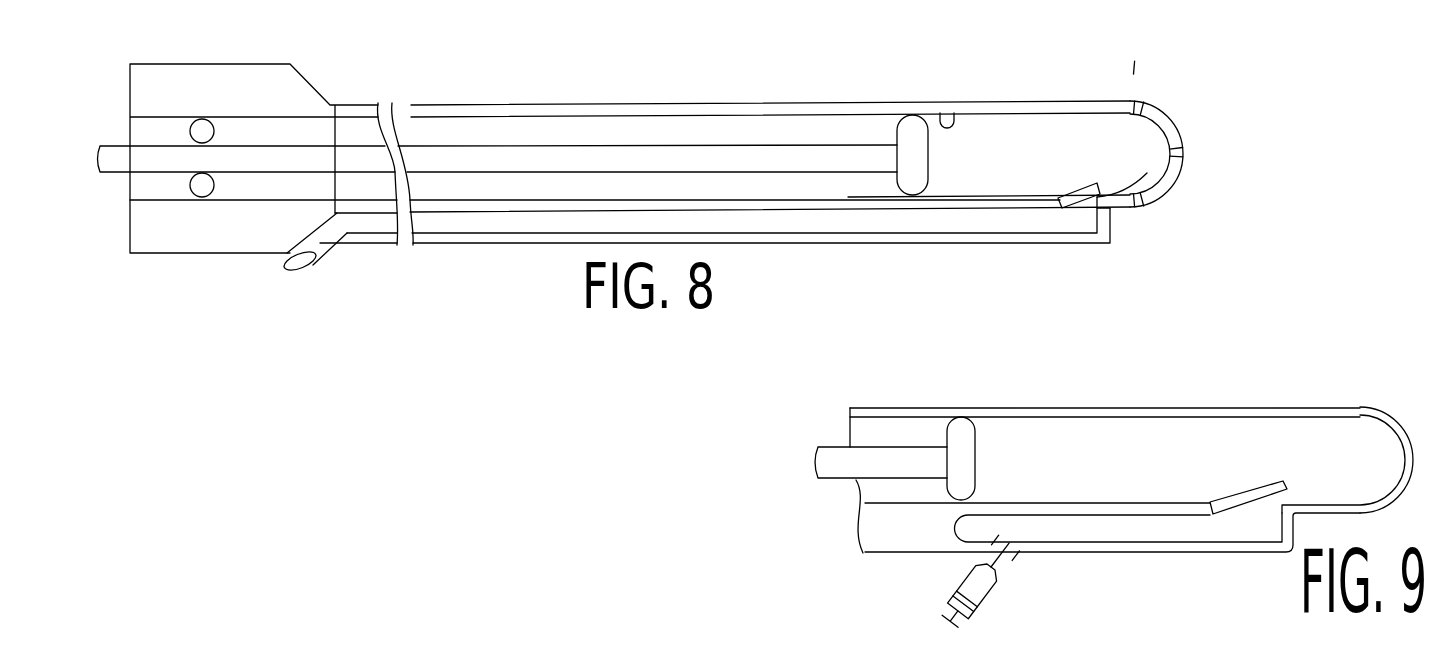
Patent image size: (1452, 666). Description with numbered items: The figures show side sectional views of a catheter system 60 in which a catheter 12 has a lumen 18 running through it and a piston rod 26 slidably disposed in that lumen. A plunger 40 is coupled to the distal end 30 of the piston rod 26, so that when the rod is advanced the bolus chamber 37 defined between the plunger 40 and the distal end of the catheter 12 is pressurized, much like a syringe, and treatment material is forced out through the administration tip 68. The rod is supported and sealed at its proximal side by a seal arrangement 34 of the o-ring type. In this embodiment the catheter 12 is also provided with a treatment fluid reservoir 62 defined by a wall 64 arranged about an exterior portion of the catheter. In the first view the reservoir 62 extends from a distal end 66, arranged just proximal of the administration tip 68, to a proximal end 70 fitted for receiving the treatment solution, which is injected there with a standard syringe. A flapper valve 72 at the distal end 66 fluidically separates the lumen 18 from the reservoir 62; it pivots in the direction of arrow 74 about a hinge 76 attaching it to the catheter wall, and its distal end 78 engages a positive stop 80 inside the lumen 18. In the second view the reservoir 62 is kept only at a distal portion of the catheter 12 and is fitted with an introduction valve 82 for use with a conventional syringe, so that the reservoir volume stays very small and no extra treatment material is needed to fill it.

In FIG. 8, the catheter 12 is at (480, 98).
In FIG. 9, the catheter 12 is at (1106, 406).
In FIG. 8, the lumen 18 is at (952, 112).
In FIG. 8, the piston rod 26 is at (617, 146).
In FIG. 8, the distal end 30 is at (883, 155).
In FIG. 9, the distal end 30 is at (908, 462).
In FIG. 8, the seal arrangement 34 is at (197, 208).
In FIG. 8, the bolus chamber 37 is at (978, 128).
In FIG. 9, the bolus chamber 37 is at (1199, 438).
In FIG. 8, the plunger 40 is at (912, 132).
In FIG. 9, the plunger 40 is at (962, 432).
In FIG. 8, the catheter system 60 is at (742, 97).
In FIG. 9, the catheter system 60 is at (1358, 392).
In FIG. 8, the treatment fluid reservoir 62 is at (970, 218).
In FIG. 9, the treatment fluid reservoir 62 is at (1142, 528).
In FIG. 8, the wall 64 is at (908, 236).
In FIG. 8, the distal end 66 is at (1089, 245).
In FIG. 8, the administration tip 68 is at (1187, 160).
In FIG. 8, the proximal end 70 is at (298, 267).
In FIG. 8, the flapper valve 72 is at (1082, 162).
In FIG. 9, the flapper valve 72 is at (1253, 482).
In FIG. 8, the arrow 74 is at (1072, 165).
In FIG. 8, the hinge 76 is at (1063, 198).
In FIG. 8, the distal end 78 is at (1147, 173).
In FIG. 8, the positive stop 80 is at (1103, 203).
In FIG. 9, the introduction valve 82 is at (1013, 553).